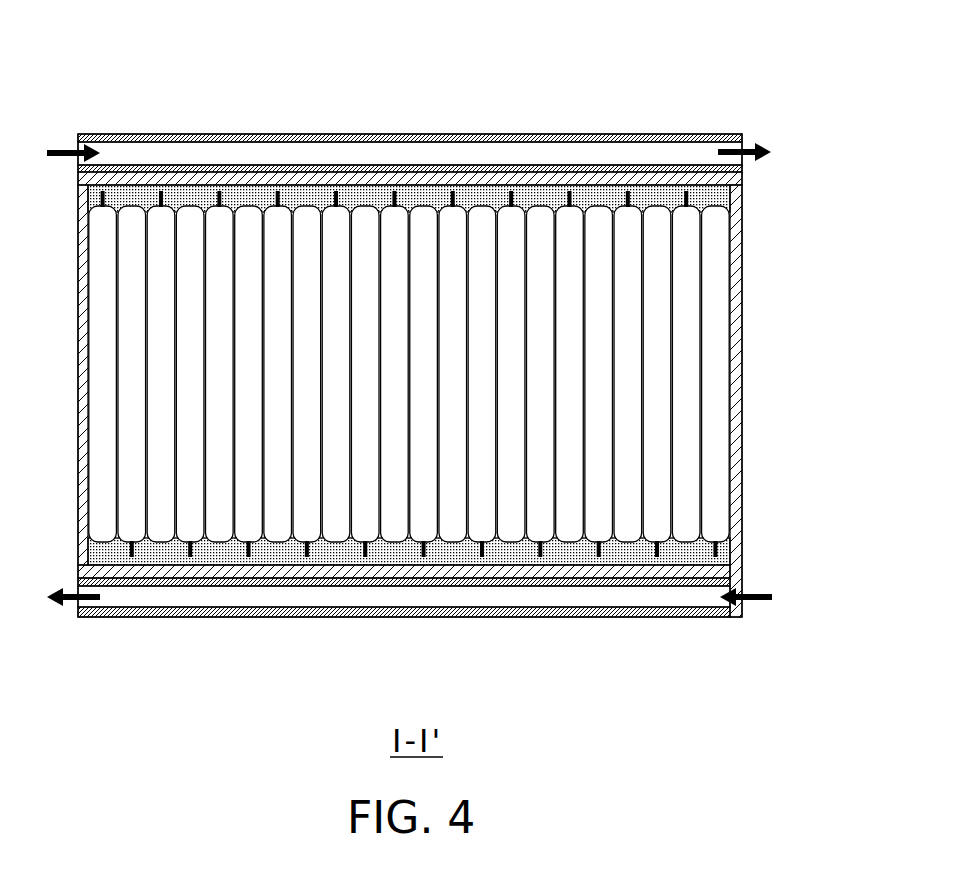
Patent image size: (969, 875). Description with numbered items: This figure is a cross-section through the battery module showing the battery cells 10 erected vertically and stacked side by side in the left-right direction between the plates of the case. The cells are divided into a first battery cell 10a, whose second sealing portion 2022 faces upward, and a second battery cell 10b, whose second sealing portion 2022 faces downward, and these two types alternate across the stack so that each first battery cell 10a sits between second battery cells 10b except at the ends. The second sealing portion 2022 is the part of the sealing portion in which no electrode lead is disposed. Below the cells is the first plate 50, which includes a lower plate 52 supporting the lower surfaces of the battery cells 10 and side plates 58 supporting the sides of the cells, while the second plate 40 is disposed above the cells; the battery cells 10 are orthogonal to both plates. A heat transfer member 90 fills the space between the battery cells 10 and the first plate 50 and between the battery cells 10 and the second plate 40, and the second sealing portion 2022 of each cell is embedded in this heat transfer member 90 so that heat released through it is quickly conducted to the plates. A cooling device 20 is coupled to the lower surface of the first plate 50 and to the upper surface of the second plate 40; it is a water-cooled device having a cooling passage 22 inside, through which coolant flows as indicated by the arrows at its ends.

The battery cell 10 is at (462, 374).
The first battery cell 10a is at (685, 308).
The second battery cell 10b is at (717, 388).
The second sealing portion 2022 is at (690, 197).
The cooling device 20 is at (152, 134).
The cooling passage 22 is at (319, 154).
The second plate 40 is at (620, 172).
The heat transfer member 90 is at (425, 196).
The first plate 50 is at (433, 446).
The lower plate 52 is at (697, 585).
The side plate 58 is at (742, 488).